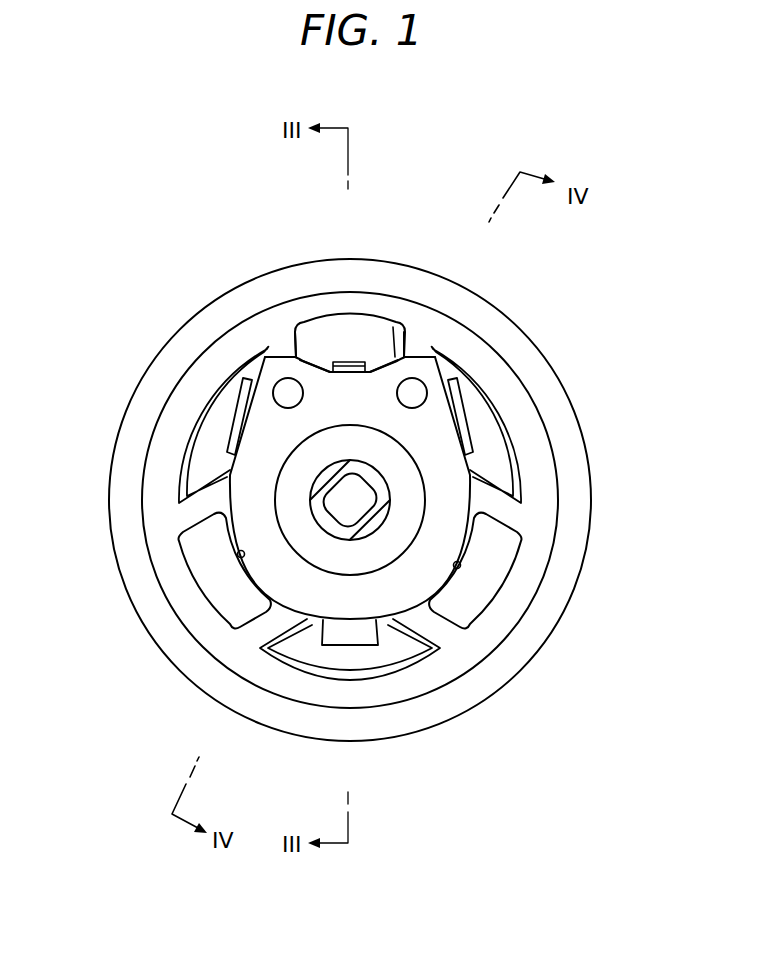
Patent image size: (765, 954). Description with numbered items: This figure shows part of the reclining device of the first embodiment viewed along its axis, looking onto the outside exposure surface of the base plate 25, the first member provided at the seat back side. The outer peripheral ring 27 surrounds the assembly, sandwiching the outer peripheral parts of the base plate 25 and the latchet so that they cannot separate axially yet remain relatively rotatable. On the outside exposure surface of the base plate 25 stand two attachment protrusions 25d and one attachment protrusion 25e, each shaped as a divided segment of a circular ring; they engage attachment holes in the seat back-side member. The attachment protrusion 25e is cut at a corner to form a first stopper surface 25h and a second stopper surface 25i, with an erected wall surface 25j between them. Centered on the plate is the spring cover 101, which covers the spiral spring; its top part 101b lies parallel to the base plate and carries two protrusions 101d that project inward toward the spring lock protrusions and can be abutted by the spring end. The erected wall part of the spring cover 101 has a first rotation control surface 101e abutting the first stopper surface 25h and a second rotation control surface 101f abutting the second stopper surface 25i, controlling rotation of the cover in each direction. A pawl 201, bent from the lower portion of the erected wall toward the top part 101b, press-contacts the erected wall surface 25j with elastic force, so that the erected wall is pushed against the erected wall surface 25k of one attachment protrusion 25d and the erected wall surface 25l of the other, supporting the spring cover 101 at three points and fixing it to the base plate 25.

The outer peripheral ring 27 is at (556, 416).
The base plate 25 is at (462, 656).
The attachment protrusions 25d is at (205, 582).
The erected wall surface 25k is at (238, 552).
The erected wall surface 25l is at (460, 566).
The first stopper surface 25h is at (310, 355).
The erected wall surface 25j is at (330, 358).
The attachment protrusion 25e is at (378, 342).
The second stopper surface 25i is at (395, 340).
The pawl 201 is at (360, 362).
The spring cover 101 is at (448, 475).
The top part 101b is at (440, 427).
The protrusions 101d is at (290, 393).
The first rotation control surface 101e is at (296, 324).
The second rotation control surface 101f is at (407, 345).